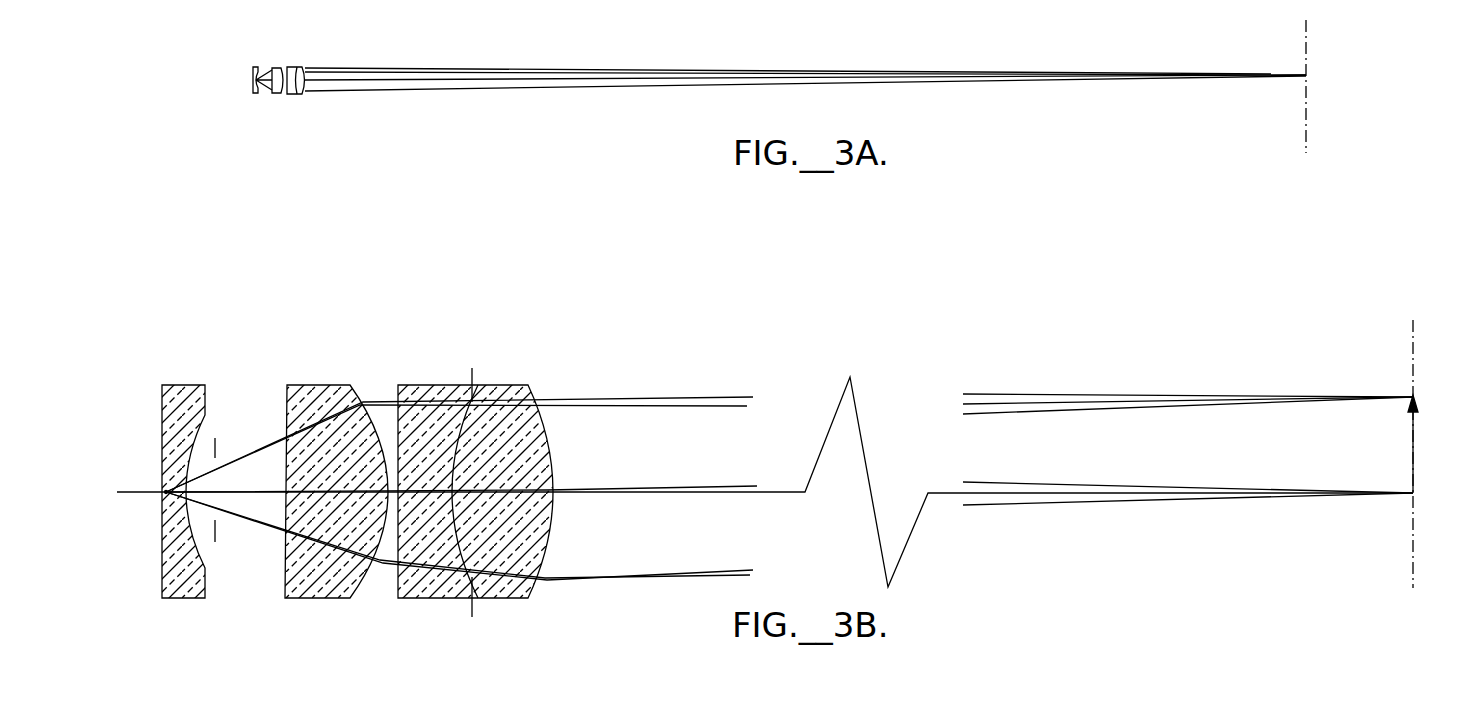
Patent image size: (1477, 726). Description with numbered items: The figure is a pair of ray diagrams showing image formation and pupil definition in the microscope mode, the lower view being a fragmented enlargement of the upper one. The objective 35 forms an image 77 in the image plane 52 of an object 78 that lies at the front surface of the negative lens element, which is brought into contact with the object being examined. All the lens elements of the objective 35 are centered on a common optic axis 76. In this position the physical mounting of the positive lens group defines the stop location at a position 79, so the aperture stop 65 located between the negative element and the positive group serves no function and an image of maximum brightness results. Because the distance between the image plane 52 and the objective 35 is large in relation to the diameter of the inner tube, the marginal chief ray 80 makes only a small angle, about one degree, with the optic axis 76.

In FIG. 3A, the objective 35 is at (294, 56).
In FIG. 3A, the image plane 52 is at (1308, 137).
In FIG. 3B, the image plane 52 is at (1475, 387).
In FIG. 3B, the aperture stop 65 is at (215, 542).
In FIG. 3B, the optic axis 76 is at (1147, 492).
In FIG. 3A, the image 77 is at (1308, 76).
In FIG. 3B, the image 77 is at (1418, 441).
In FIG. 3B, the object 78 is at (161, 497).
In FIG. 3B, the stop location 79 is at (472, 617).
In FIG. 3B, the marginal chief ray 80 is at (742, 486).